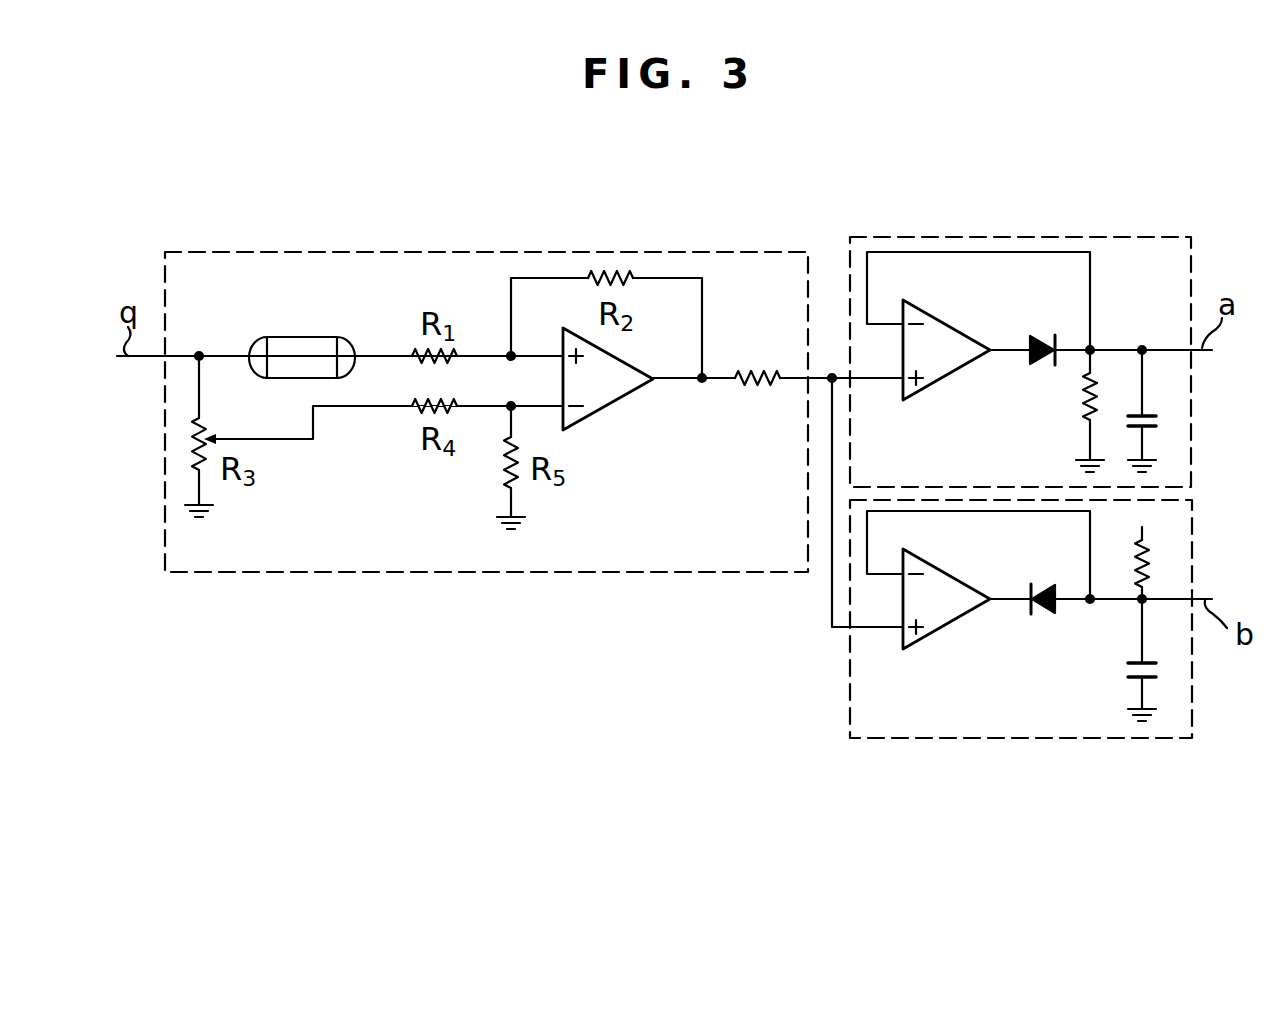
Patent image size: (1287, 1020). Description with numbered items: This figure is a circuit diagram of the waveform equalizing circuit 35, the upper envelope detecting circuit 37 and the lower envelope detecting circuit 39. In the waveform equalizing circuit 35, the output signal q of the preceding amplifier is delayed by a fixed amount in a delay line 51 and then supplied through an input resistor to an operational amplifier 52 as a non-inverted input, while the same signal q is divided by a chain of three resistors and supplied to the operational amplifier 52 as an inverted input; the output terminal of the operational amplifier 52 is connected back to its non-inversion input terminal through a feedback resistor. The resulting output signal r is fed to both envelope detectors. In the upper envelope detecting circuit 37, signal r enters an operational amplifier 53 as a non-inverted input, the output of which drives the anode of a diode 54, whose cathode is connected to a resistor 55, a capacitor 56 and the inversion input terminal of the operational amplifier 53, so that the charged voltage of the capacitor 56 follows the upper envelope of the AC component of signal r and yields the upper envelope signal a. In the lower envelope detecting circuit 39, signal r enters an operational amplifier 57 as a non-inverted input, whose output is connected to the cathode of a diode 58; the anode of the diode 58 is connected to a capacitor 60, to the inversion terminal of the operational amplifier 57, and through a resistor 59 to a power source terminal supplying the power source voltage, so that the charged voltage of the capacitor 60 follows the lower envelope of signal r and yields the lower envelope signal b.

The waveform equalizing circuit 35 is at (493, 574).
The upper envelope detecting circuit 37 is at (1110, 235).
The lower envelope detecting circuit 39 is at (1004, 740).
The delay line 51 is at (305, 337).
The operational amplifier 52 is at (603, 410).
The operational amplifier 53 is at (958, 334).
The diode 54 is at (1040, 333).
The resistor 55 is at (1079, 396).
The capacitor 56 is at (1160, 424).
The operational amplifier 57 is at (970, 588).
The diode 58 is at (1040, 616).
The resistor 59 is at (1155, 559).
The capacitor 60 is at (1127, 672).